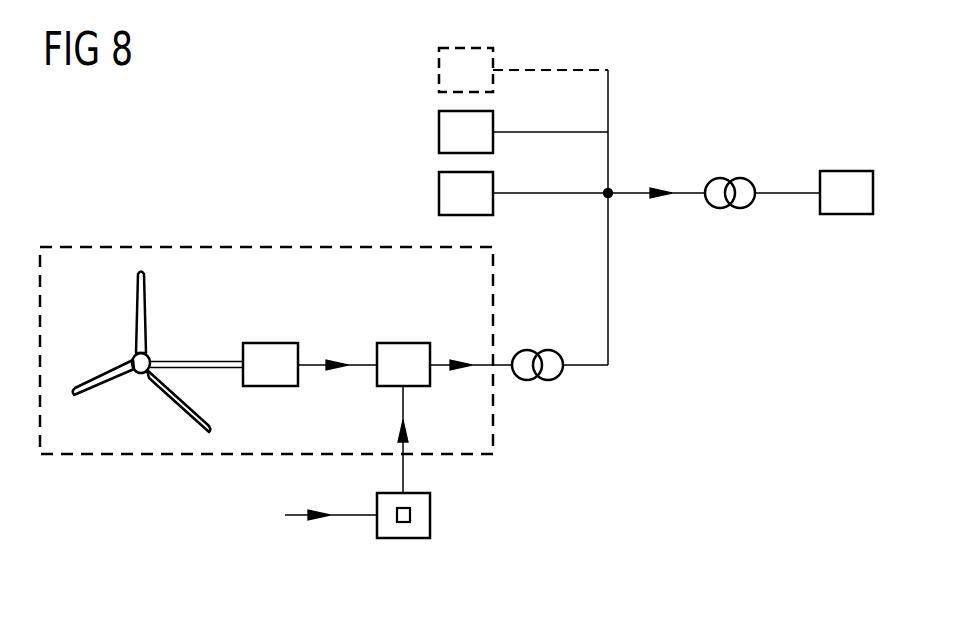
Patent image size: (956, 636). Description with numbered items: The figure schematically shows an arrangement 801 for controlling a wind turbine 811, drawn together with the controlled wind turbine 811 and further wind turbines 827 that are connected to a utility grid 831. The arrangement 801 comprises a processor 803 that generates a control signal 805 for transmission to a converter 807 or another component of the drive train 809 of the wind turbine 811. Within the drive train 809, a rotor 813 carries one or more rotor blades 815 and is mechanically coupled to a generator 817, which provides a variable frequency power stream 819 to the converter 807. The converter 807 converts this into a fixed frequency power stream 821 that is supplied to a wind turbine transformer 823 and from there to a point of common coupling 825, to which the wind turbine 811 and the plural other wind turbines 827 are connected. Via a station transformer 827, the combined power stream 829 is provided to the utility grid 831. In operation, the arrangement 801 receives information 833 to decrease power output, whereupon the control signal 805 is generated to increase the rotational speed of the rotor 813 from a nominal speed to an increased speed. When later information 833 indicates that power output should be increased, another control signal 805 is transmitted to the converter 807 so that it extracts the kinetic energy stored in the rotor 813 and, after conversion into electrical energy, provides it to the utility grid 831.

The arrangement 801 is at (403, 539).
The processor 803 is at (411, 513).
The control signal 805 is at (400, 432).
The converter 807 is at (404, 343).
The drive train 809 is at (250, 247).
The wind turbine 811 is at (152, 208).
The rotor 813 is at (195, 360).
The rotor blades 815 is at (136, 310).
The generator 817 is at (268, 343).
The variable frequency power stream 819 is at (336, 358).
The fixed frequency power stream 821 is at (456, 358).
The wind turbine transformer 823 is at (541, 349).
The point of common coupling 825 is at (610, 199).
The further wind turbines 827 is at (439, 70).
The combined power stream 829 is at (672, 190).
The utility grid 831 is at (846, 171).
The information 833 is at (316, 522).